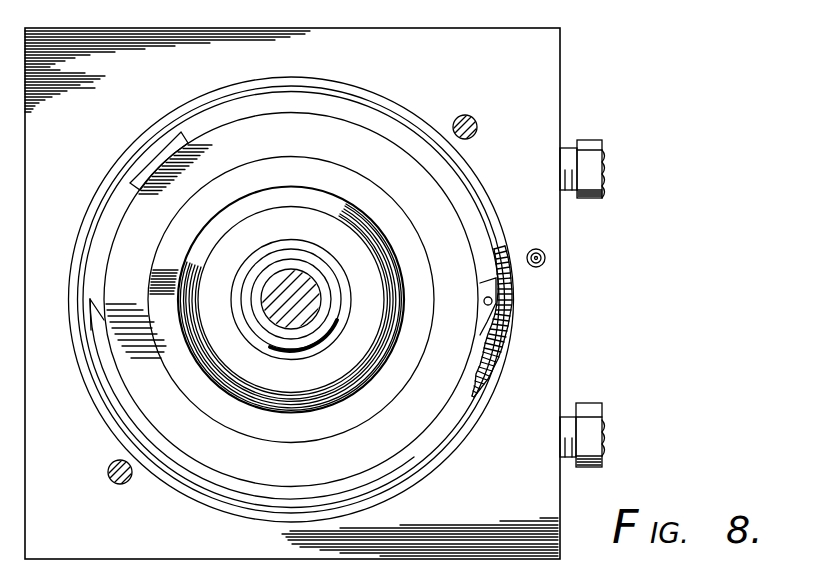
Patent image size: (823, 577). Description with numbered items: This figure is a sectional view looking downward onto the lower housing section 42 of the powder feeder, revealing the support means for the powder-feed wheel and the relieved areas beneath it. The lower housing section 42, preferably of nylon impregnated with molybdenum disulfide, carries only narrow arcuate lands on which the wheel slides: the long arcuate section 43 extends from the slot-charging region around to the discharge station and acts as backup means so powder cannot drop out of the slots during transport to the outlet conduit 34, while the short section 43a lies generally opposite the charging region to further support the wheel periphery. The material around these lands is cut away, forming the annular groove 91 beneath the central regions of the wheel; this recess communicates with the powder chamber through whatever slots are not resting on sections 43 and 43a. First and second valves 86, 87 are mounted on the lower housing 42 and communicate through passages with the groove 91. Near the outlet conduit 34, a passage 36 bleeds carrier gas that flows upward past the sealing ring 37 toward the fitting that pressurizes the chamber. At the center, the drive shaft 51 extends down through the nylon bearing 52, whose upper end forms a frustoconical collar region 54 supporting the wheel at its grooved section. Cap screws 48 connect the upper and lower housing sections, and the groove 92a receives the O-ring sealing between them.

The lower housing section 42 is at (561, 80).
The arcuate section 43 is at (494, 353).
The short section 43a is at (140, 170).
The outlet conduit 34 is at (492, 300).
The passage 36 is at (546, 258).
The sealing ring 37 is at (540, 265).
The cap screws 48 is at (478, 127).
The shaft 51 is at (289, 326).
The bearing 52 is at (248, 301).
The frustoconical collar region 54 is at (258, 277).
The first valve 86 is at (587, 142).
The second valve 87 is at (588, 404).
The annular groove 91 is at (305, 437).
The groove 92a is at (237, 512).